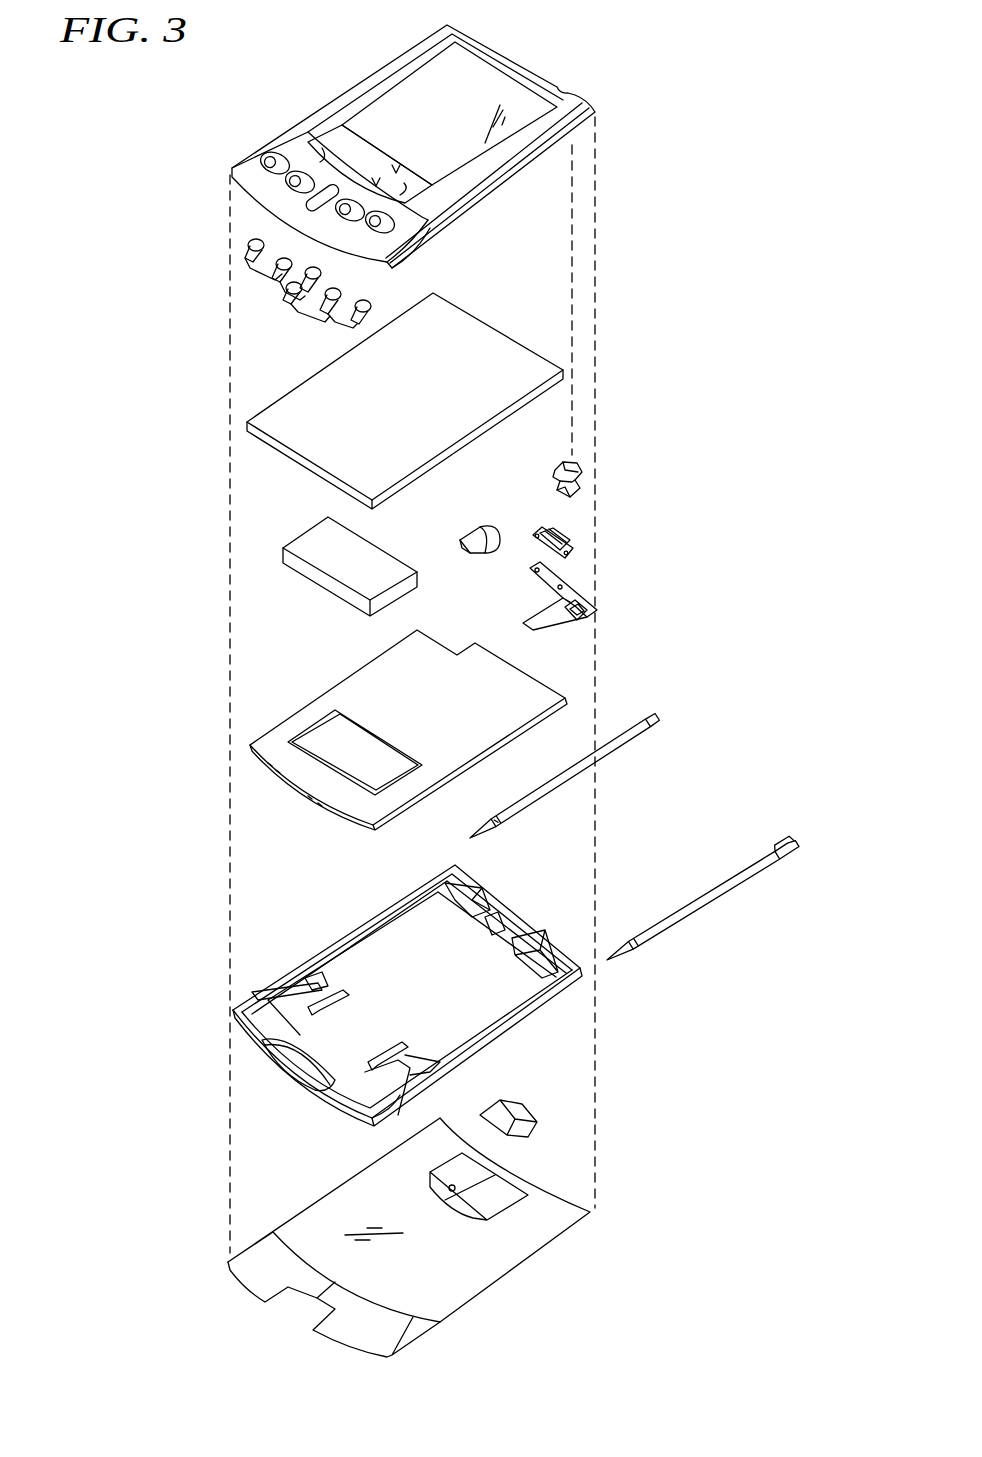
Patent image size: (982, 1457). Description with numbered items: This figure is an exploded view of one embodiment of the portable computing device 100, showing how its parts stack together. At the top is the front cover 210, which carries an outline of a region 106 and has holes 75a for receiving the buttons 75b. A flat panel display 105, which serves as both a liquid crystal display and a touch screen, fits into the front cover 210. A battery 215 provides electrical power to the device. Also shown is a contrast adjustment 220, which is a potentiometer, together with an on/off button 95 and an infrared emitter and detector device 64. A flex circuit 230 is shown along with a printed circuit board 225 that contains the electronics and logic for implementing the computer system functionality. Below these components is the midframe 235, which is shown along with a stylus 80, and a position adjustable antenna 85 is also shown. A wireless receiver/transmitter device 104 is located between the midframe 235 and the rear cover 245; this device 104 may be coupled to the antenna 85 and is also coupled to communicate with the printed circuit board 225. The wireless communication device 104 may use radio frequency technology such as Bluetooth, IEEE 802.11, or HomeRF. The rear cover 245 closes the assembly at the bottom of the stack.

The portable computing device 100 is at (122, 91).
The front cover 210 is at (600, 109).
The region 106 is at (335, 140).
The holes 75a is at (272, 160).
The buttons 75b is at (252, 243).
The flat panel display 105 is at (252, 411).
The battery 215 is at (285, 541).
The contrast adjustment 220 is at (482, 520).
The on/off button 95 is at (588, 470).
The infrared emitter and detector device 64 is at (573, 538).
The flex circuit 230 is at (590, 595).
The printed circuit board 225 is at (257, 730).
The position adjustable antenna 85 is at (668, 713).
The stylus 80 is at (790, 832).
The midframe 235 is at (553, 1010).
The wireless receiver/transmitter device 104 is at (522, 1105).
The rear cover 245 is at (550, 1243).